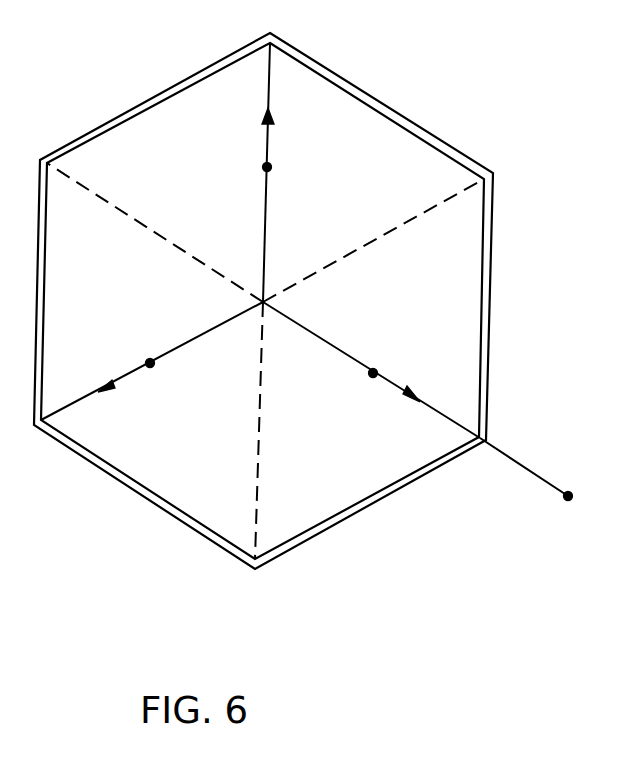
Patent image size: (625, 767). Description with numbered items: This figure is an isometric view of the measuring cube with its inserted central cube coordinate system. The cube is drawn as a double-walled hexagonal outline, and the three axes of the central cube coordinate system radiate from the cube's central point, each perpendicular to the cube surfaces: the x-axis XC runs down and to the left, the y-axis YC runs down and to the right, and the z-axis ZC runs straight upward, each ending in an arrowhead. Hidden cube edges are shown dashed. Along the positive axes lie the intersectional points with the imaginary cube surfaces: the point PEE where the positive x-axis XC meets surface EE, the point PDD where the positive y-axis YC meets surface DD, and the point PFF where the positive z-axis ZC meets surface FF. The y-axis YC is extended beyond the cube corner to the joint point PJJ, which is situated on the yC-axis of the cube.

The x-axis of the central cube coordinate system XC is at (152, 362).
The y-axis of the central cube coordinate system YC is at (371, 370).
The z-axis of the central cube coordinate system ZC is at (283, 172).
The intersectional point PFF is at (291, 157).
The intersectional point PEE is at (173, 370).
The intersectional point PDD is at (398, 367).
The joint point PJJ is at (528, 485).